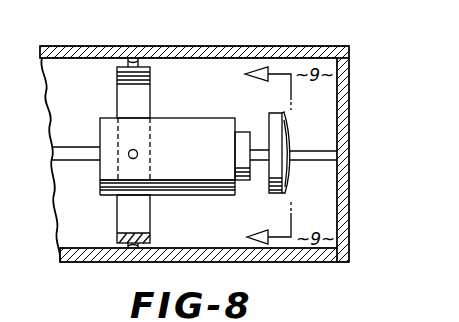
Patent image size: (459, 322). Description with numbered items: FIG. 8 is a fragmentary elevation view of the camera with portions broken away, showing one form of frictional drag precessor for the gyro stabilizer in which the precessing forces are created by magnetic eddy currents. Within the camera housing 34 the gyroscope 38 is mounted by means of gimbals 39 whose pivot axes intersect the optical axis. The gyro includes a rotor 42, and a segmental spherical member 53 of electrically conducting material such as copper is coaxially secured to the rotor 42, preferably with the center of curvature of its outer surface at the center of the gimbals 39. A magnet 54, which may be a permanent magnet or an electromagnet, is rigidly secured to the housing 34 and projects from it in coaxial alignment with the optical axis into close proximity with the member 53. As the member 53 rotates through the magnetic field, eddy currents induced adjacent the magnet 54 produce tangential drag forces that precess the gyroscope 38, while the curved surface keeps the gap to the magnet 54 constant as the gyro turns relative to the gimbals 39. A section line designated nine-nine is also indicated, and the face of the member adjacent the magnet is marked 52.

The housing 34 is at (316, 43).
The gyroscope 38 is at (107, 195).
The gimbals 39 is at (157, 108).
The rotor 42 is at (243, 132).
The disc face 52 is at (295, 177).
The segmental spherical member 53 is at (285, 127).
The magnet 54 is at (327, 155).